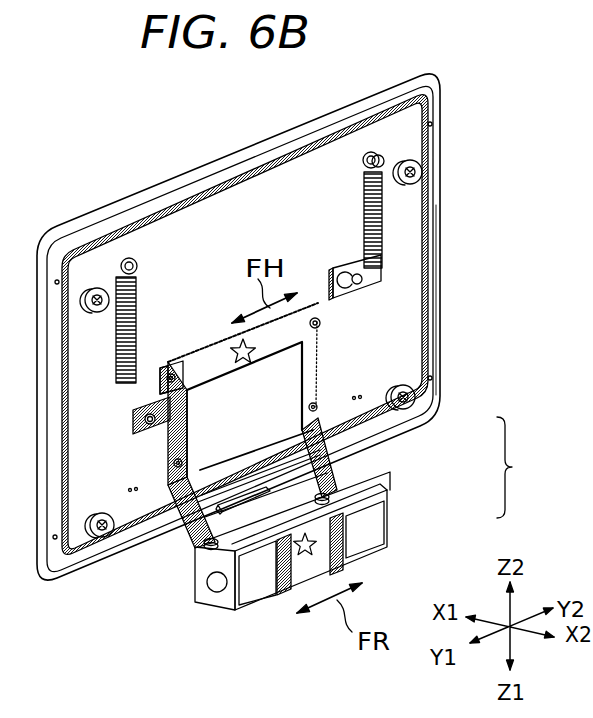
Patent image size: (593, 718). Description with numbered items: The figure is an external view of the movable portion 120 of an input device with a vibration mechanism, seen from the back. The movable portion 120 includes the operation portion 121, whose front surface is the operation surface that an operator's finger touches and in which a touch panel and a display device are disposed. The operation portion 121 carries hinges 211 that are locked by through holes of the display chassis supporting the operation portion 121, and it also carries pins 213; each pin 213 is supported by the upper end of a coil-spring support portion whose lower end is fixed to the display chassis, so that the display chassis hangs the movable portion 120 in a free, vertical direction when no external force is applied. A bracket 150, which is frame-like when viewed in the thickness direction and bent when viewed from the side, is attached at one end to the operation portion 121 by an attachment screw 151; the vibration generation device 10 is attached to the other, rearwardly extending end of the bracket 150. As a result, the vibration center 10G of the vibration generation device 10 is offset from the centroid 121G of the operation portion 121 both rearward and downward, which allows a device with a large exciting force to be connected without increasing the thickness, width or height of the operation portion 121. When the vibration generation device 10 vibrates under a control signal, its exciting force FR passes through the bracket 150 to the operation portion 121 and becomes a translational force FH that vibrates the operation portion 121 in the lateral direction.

The vibration generation device 10 is at (393, 524).
The vibration center 10G is at (303, 558).
The movable portion 120 is at (529, 467).
The operation portion 121 is at (388, 418).
The centroid 121G is at (248, 366).
The bracket 150 is at (326, 478).
The attachment screw 151 is at (182, 368).
The hinge 211 is at (103, 292).
The pin 213 is at (383, 263).